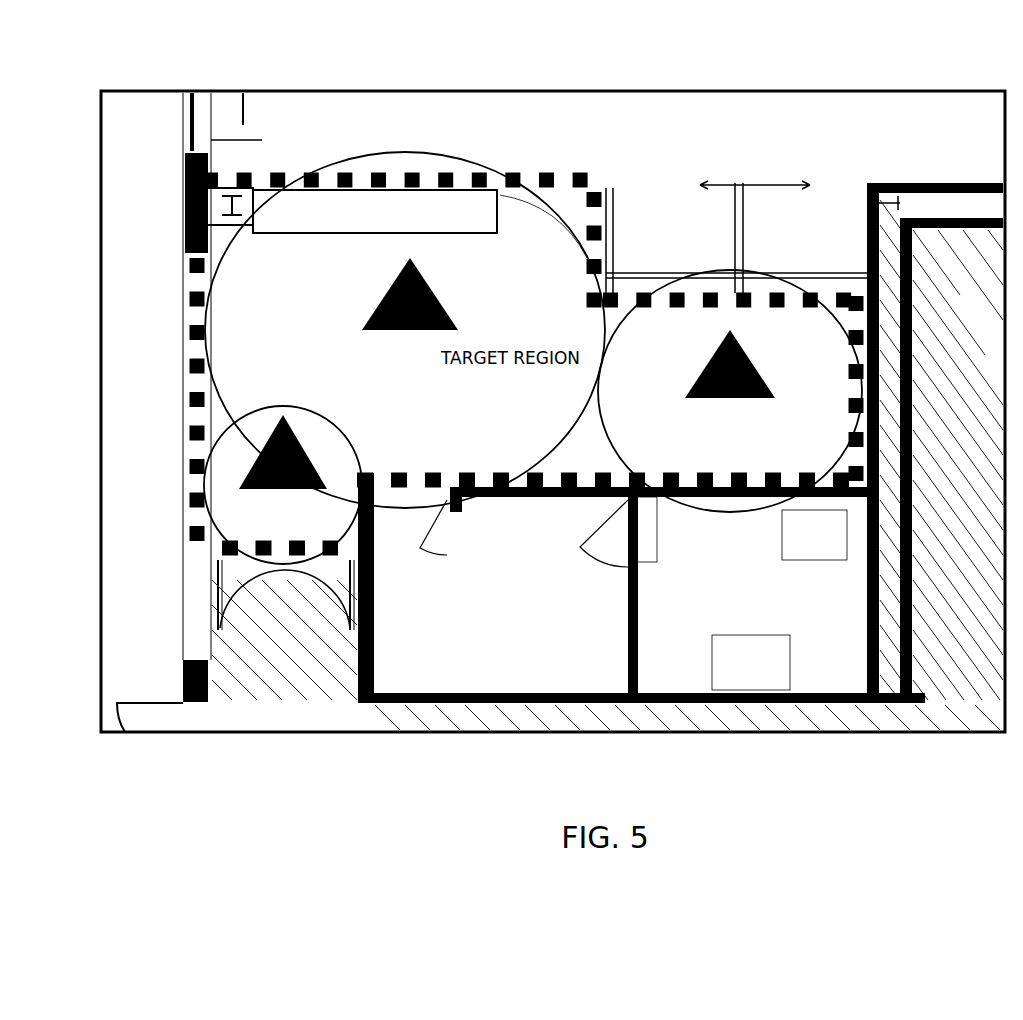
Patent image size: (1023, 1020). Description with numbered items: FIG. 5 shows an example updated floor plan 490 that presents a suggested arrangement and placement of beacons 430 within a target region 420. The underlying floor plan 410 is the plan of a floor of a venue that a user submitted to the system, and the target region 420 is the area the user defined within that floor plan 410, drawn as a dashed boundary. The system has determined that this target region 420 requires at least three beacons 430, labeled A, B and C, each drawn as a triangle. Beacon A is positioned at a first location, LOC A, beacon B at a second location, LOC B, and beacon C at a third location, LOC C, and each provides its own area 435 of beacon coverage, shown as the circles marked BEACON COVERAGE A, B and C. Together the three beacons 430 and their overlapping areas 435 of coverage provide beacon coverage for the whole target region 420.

The updated floor plan 490 is at (612, 47).
The floor plan 410 is at (810, 106).
The target region 420 is at (580, 172).
The beacon 430 is at (436, 288).
The area of beacon coverage 435 is at (420, 152).